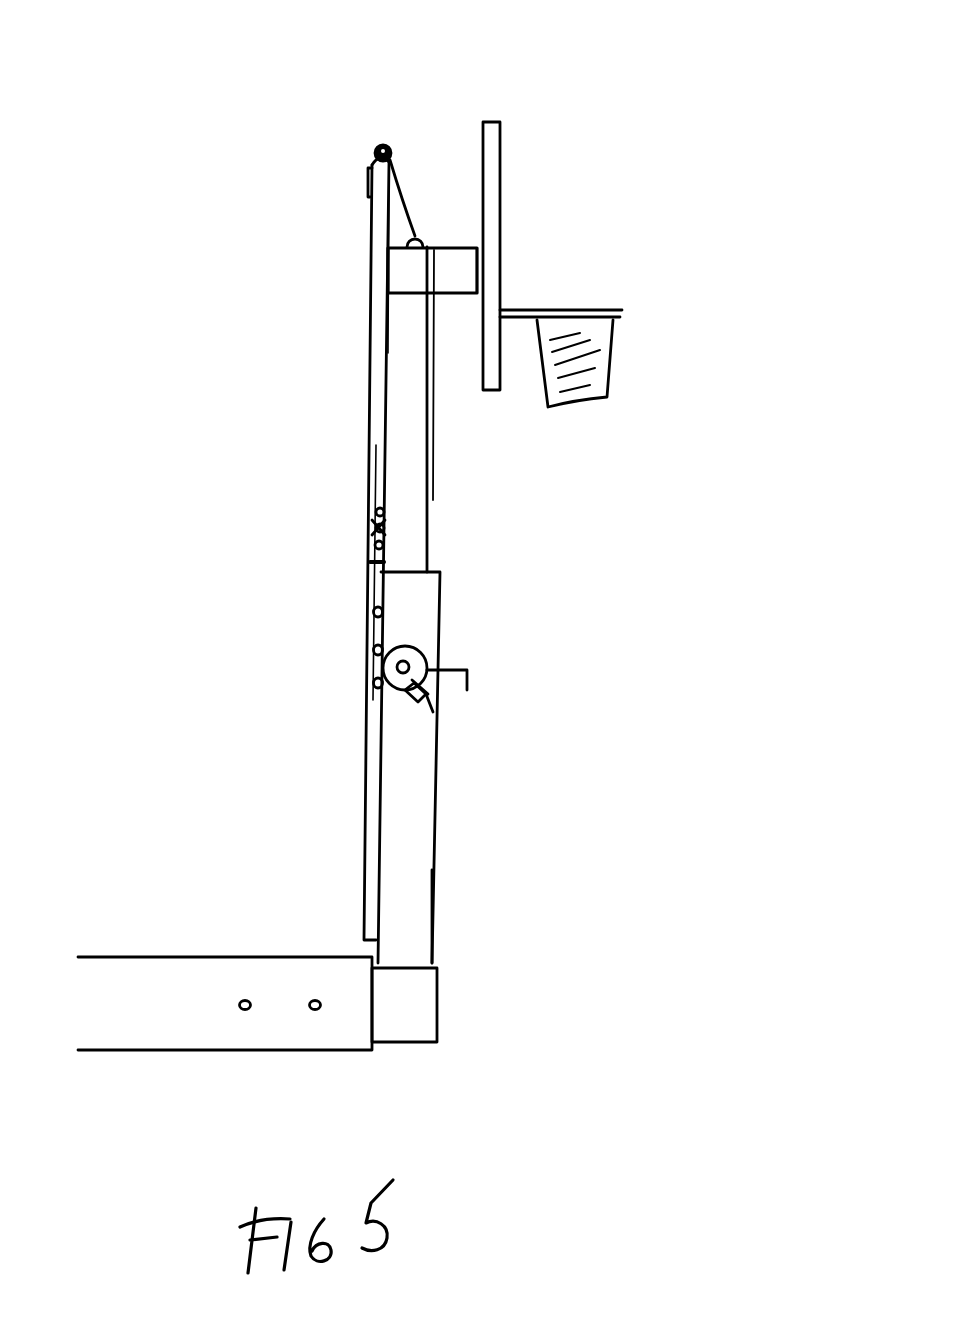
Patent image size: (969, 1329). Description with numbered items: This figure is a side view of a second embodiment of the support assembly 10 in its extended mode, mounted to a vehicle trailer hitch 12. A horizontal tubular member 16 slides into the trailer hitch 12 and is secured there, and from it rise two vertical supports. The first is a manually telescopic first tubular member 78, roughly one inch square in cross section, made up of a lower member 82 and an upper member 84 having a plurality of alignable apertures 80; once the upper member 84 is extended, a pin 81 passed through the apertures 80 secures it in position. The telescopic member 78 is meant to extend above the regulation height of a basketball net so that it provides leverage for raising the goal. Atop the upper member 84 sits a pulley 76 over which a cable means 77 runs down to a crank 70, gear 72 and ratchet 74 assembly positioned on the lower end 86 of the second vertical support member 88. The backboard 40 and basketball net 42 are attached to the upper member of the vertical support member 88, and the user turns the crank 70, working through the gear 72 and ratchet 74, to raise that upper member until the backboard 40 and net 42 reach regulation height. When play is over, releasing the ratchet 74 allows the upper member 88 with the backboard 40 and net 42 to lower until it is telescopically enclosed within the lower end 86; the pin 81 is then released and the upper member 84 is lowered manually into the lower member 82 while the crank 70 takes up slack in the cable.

The support assembly 10 is at (109, 559).
The trailer hitch 12 is at (190, 1025).
The horizontal tubular member 16 is at (407, 1017).
The backboard 40 is at (498, 180).
The basketball net 42 is at (607, 318).
The crank 70 is at (433, 657).
The gear 72 is at (420, 677).
The ratchet 74 is at (420, 700).
The pulley 76 is at (380, 147).
The cable means 77 is at (402, 207).
The first tubular member 78 is at (367, 773).
The alignable apertures 80 is at (367, 613).
The pin 81 is at (263, 650).
The lower member 82 is at (367, 723).
The upper member 84 is at (368, 403).
The lower end 86 is at (433, 867).
The vertical support member 88 is at (455, 592).